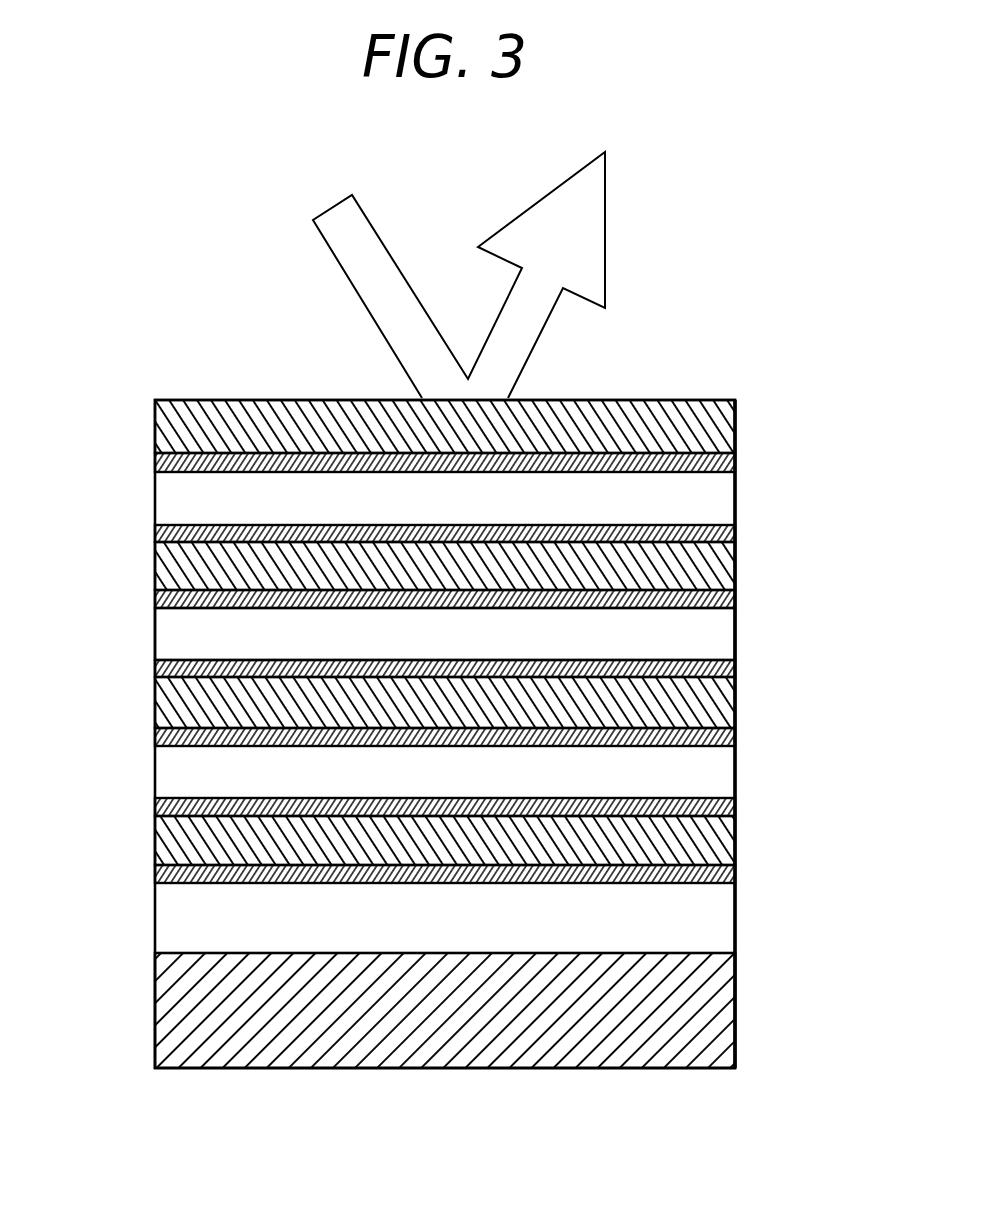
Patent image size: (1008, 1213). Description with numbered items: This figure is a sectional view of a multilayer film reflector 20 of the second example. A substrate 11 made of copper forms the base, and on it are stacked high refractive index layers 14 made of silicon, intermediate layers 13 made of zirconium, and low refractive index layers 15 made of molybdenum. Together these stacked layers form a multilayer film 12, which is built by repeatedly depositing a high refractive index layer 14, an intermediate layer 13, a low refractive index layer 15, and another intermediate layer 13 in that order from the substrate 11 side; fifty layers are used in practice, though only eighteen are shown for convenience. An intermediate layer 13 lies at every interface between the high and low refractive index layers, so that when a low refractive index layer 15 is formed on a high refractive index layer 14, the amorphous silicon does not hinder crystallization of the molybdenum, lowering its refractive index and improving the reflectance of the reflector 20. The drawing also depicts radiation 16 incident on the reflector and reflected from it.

The substrate 11 is at (688, 995).
The multilayer film 12 is at (458, 676).
The intermediate layer 13 is at (735, 666).
The high refractive index layer 14 is at (718, 698).
The low refractive index layer 15 is at (718, 640).
The reflected light 16 is at (580, 265).
The multilayer film reflector 20 is at (767, 430).